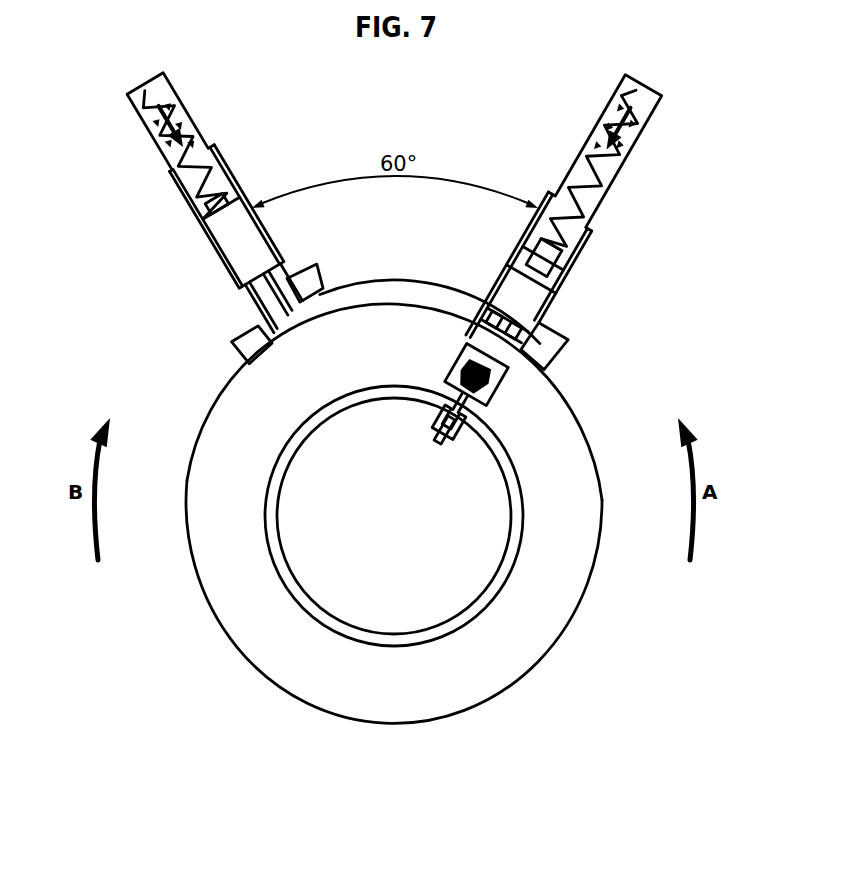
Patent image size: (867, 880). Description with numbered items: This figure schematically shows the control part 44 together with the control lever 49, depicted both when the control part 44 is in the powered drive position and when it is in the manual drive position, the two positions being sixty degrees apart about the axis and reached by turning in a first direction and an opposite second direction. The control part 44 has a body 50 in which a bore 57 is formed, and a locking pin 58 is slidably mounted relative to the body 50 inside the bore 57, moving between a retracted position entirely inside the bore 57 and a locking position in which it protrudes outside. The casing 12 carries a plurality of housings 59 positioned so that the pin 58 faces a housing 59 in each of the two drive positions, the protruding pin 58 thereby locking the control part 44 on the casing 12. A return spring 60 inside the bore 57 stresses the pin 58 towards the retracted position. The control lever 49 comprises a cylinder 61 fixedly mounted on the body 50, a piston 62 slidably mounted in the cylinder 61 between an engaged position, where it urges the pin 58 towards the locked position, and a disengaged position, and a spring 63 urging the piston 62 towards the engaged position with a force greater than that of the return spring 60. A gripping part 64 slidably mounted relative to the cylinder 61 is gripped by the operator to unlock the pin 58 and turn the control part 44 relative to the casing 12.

The casing 12 is at (453, 583).
The control part 44 is at (228, 648).
The control lever 49 is at (201, 114).
The body 50 is at (582, 560).
The bore 57 is at (493, 365).
The locking pin 58 is at (458, 415).
The housings 59 is at (460, 437).
The return spring 60 is at (462, 395).
The cylinder 61 is at (263, 224).
The piston 62 is at (233, 246).
The spring 63 is at (205, 145).
The gripping part 64 is at (156, 146).